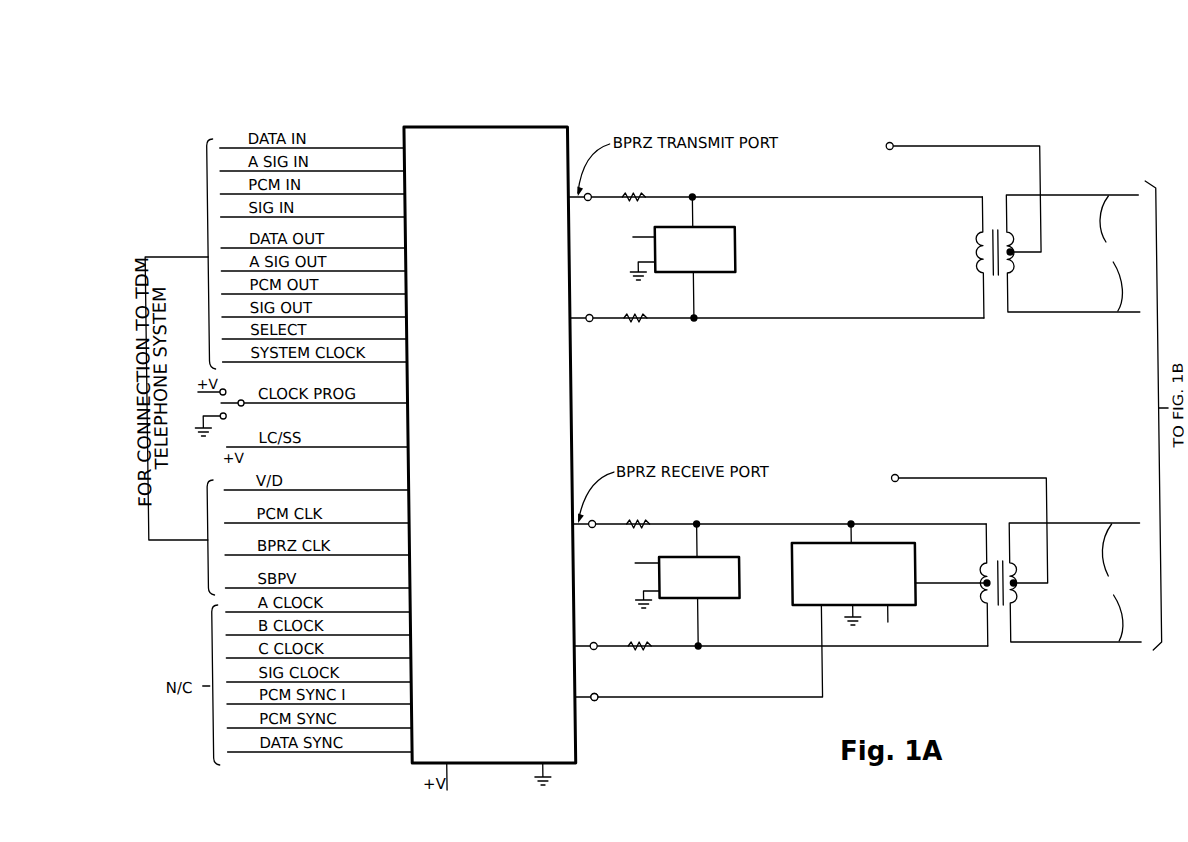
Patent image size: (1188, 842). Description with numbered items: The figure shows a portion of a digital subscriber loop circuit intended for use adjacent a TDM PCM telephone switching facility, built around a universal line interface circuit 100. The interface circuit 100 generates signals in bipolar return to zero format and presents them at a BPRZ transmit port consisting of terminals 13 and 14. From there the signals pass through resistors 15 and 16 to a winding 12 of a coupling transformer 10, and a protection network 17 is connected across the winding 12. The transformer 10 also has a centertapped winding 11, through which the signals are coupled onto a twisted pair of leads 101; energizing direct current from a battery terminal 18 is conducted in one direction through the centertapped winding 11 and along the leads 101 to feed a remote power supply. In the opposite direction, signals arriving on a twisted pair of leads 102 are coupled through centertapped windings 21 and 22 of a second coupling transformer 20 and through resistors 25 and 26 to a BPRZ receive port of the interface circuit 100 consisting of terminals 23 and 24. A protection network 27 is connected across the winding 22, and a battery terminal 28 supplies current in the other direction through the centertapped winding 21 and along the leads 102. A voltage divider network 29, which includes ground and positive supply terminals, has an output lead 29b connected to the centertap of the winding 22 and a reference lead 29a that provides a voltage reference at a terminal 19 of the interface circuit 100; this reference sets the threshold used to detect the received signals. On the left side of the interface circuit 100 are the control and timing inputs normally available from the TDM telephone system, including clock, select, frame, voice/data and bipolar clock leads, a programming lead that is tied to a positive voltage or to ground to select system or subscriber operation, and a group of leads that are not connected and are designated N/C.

The coupling transformer 10 is at (1032, 268).
The centertapped winding 11 is at (1016, 258).
The winding 12 is at (980, 250).
The terminal 13 is at (589, 201).
The terminal 14 is at (589, 322).
The resistor 15 is at (628, 193).
The resistor 16 is at (632, 322).
The protection network 17 is at (740, 258).
The battery terminal 18 is at (894, 142).
The terminal 19 is at (590, 701).
The coupling transformer 20 is at (1042, 596).
The centertapped winding 21 is at (1015, 590).
The centertapped winding 22 is at (982, 590).
The terminal 23 is at (590, 528).
The terminal 24 is at (591, 642).
The resistor 25 is at (633, 520).
The resistor 26 is at (650, 650).
The protection network 27 is at (740, 590).
The battery terminal 28 is at (896, 474).
The voltage divider network 29 is at (790, 568).
The reference lead 29a is at (695, 699).
The output lead 29b is at (955, 583).
The universal line interface circuit 100 is at (560, 445).
The twisted pair of leads 101 is at (1110, 253).
The twisted pair of leads 102 is at (1111, 582).